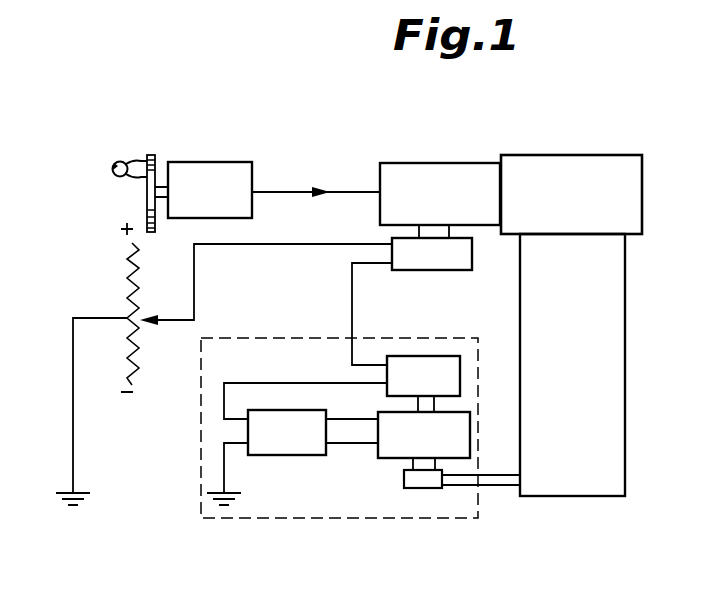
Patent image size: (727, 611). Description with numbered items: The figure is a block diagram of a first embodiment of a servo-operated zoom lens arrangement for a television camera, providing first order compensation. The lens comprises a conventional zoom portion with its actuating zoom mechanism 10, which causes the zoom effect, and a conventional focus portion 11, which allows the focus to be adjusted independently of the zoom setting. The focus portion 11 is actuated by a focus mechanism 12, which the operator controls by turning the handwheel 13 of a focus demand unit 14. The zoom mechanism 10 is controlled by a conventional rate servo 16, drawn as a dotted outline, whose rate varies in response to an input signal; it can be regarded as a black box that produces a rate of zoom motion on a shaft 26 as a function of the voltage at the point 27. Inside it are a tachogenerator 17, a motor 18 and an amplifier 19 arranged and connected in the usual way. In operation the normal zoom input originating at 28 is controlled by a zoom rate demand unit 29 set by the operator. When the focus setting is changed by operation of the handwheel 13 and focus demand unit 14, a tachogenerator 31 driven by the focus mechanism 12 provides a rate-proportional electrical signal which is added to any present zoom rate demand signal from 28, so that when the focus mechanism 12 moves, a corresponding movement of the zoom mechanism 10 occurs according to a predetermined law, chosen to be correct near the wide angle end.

The zoom mechanism 10 is at (585, 385).
The focus portion 11 is at (585, 207).
The focus mechanism 12 is at (454, 207).
The handwheel 13 is at (146, 209).
The focus demand unit 14 is at (226, 203).
The rate servo 16 is at (360, 517).
The tachogenerator 17 is at (437, 388).
The motor 18 is at (438, 447).
The amplifier 19 is at (301, 444).
The shaft 26 is at (498, 478).
The point 27 is at (354, 336).
The zoom input 28 is at (200, 287).
The zoom rate demand unit 29 is at (128, 287).
The tachogenerator 31 is at (446, 267).